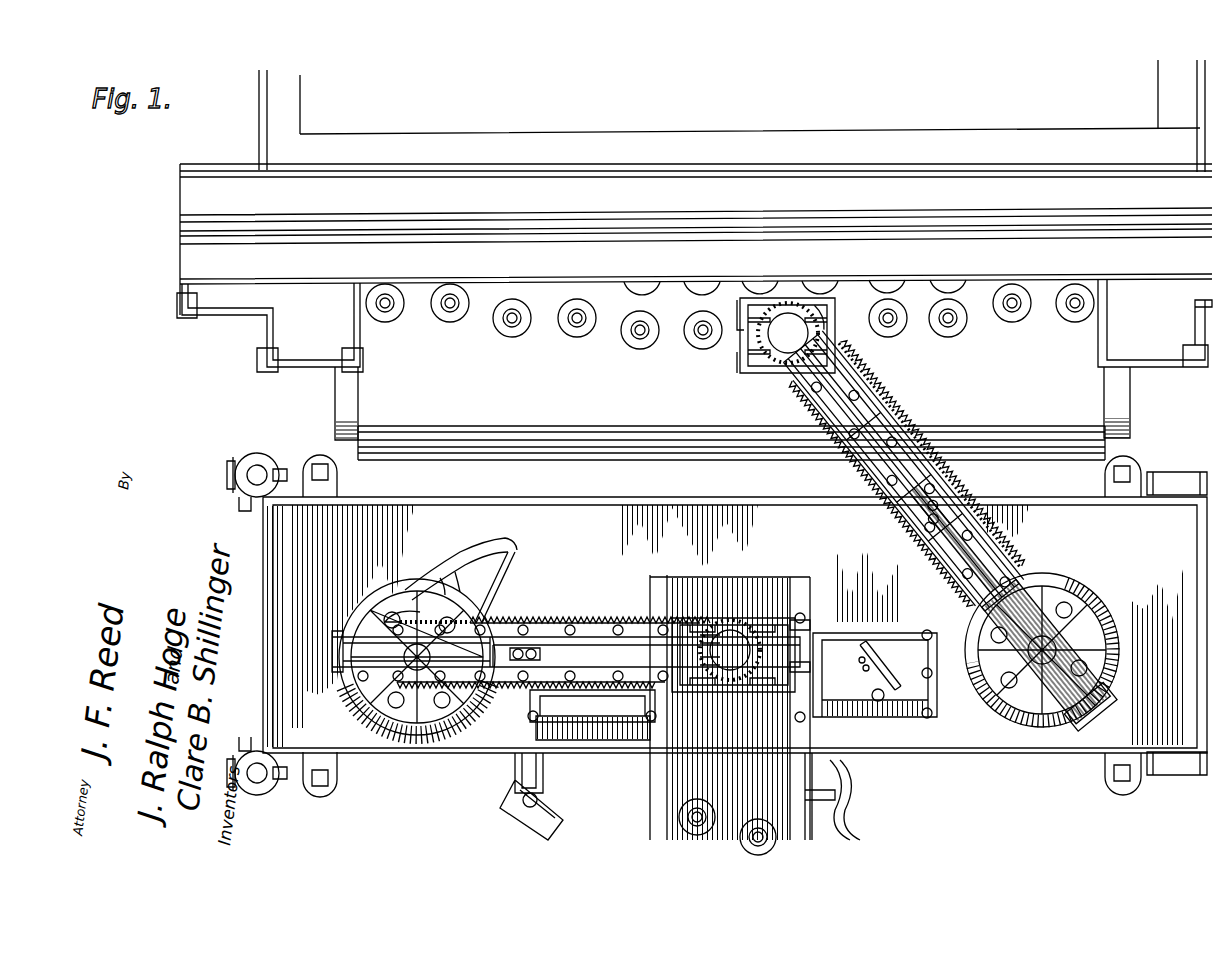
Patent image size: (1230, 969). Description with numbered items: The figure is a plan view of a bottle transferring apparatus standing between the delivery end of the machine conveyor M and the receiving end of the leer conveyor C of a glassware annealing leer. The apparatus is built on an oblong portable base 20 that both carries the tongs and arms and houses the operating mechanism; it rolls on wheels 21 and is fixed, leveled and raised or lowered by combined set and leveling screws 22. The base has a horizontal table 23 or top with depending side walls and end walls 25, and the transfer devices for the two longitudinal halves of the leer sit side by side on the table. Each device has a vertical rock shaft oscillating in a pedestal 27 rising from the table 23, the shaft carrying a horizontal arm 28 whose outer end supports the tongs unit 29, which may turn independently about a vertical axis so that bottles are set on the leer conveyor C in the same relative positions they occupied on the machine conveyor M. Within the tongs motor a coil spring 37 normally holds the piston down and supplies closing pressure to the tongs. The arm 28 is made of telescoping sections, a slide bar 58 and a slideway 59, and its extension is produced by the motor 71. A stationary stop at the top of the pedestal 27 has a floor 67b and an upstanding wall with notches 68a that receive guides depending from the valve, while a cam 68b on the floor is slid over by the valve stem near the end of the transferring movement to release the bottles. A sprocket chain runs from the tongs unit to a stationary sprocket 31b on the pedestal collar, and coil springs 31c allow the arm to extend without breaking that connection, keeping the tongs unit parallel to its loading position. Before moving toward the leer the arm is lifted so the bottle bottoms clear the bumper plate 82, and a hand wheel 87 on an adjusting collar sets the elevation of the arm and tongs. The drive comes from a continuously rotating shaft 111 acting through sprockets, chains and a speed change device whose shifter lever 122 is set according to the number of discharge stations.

The portable base 20 is at (475, 752).
The wheels 21 is at (262, 796).
The combined set and leveling screws 22 is at (1128, 470).
The horizontal table 23 is at (665, 486).
The end walls 25 is at (592, 715).
The pedestal 27 is at (403, 607).
The horizontal arm 28 is at (926, 452).
The tongs unit 29 is at (719, 366).
The sprocket 31b is at (786, 373).
The coil springs 31c is at (598, 618).
The coil spring 37 is at (788, 333).
The slide bar 58 is at (936, 445).
The slideway 59 is at (685, 537).
The floor 67b is at (485, 586).
The notches 68a is at (515, 521).
The cam 68b is at (448, 584).
The motor 71 is at (728, 674).
The bumper plate 82 is at (815, 630).
The hand wheel 87 is at (1078, 568).
The continuously rotating shaft 111 is at (545, 781).
The shifter lever 122 is at (873, 668).
The machine conveyor M is at (665, 802).
The leer conveyor C is at (731, 418).